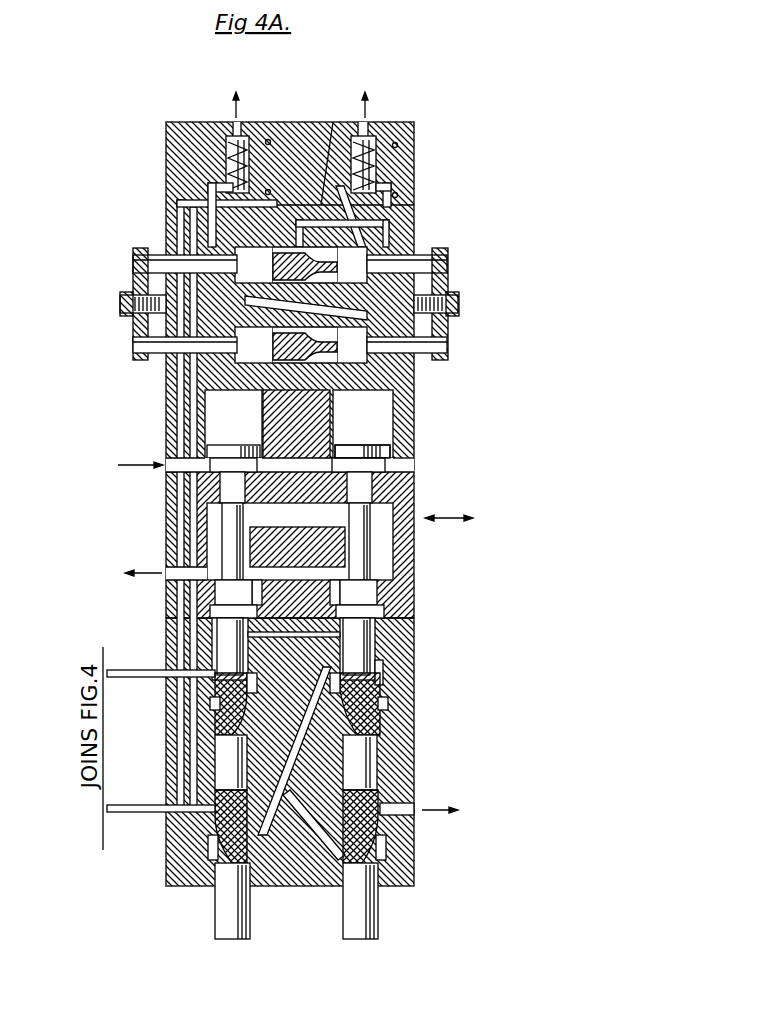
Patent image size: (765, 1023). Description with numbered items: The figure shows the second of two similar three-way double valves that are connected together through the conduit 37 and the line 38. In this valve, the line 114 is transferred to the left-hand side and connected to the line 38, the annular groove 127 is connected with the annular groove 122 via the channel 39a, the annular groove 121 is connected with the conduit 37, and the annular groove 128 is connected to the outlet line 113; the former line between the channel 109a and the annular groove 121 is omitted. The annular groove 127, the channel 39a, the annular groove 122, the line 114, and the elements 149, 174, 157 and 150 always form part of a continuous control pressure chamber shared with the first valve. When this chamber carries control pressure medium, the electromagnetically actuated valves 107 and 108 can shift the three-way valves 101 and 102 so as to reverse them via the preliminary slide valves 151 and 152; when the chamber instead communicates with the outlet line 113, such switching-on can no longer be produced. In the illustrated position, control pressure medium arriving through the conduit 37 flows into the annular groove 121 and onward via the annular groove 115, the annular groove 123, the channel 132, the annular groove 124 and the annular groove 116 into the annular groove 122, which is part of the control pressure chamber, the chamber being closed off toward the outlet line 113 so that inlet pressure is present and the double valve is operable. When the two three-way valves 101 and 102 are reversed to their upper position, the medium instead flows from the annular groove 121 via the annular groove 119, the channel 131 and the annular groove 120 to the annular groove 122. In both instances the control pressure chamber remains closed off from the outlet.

The three-way valve 102 is at (360, 485).
The line 114 is at (280, 203).
The electromagnetically actuated valve 107 is at (228, 152).
The electromagnetically actuated valve 108 is at (378, 170).
The control pressure chamber element 149 is at (212, 190).
The control pressure chamber element 174 is at (323, 198).
The control pressure chamber element 150 is at (461, 199).
The control pressure chamber element 157 is at (350, 243).
The preliminary slide valve 151 is at (283, 265).
The preliminary slide valve 152 is at (270, 345).
The three-way valve 101 is at (232, 492).
The channel 109a is at (313, 463).
The annular groove 119 is at (212, 633).
The annular groove 120 is at (377, 632).
The channel 131 is at (330, 634).
The annular groove 122 is at (378, 672).
The conduit 37 is at (160, 672).
The annular groove 121 is at (215, 688).
The annular groove 116 is at (373, 705).
The annular groove 115 is at (215, 706).
The annular groove 124 is at (375, 722).
The annular groove 123 is at (262, 740).
The channel 132 is at (258, 760).
The channel 39a is at (297, 800).
The annular groove 127 is at (213, 812).
The outlet line 113 is at (400, 815).
The line 38 is at (140, 812).
The annular groove 128 is at (383, 808).